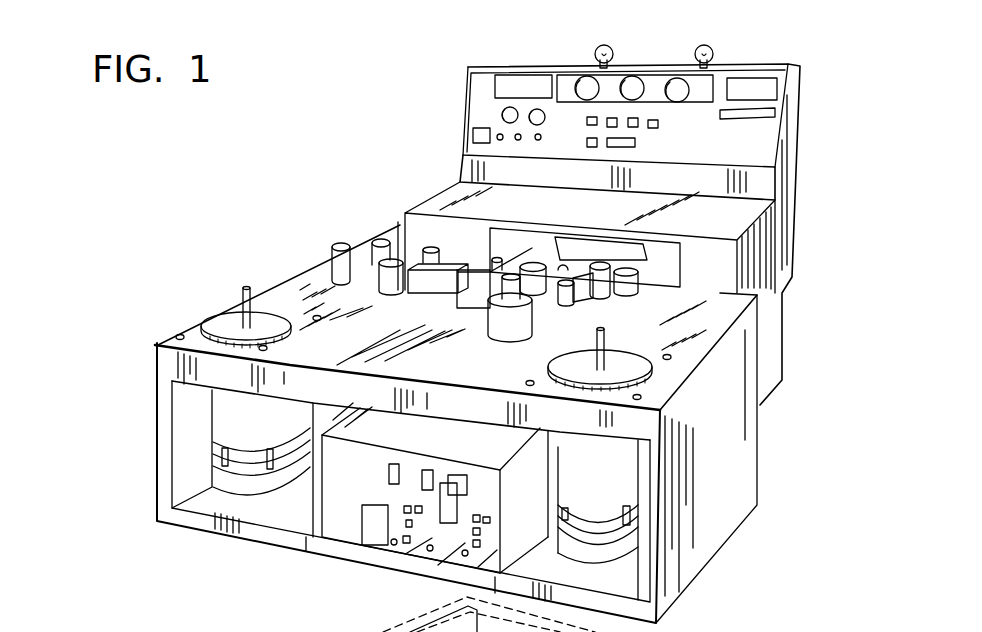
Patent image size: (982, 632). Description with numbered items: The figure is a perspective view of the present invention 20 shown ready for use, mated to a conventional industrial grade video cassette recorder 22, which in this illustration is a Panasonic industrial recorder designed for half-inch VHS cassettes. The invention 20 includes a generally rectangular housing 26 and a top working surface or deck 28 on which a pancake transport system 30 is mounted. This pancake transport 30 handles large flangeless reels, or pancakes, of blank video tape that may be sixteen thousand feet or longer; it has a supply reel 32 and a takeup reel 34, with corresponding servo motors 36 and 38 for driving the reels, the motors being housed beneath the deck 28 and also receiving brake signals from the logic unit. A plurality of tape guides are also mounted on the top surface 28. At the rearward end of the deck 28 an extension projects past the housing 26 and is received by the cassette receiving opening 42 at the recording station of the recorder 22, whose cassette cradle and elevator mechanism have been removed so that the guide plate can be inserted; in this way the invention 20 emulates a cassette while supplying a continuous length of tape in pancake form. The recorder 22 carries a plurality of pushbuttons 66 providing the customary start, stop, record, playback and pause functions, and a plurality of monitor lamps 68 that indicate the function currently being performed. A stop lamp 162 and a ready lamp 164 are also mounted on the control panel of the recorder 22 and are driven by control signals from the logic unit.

The present invention 20 is at (303, 293).
The video cassette recorder 22 is at (463, 154).
The housing 26 is at (707, 440).
The top working surface or deck 28 is at (705, 318).
The pancake transport system 30 is at (175, 317).
The supply reel 32 is at (227, 330).
The takeup reel 34 is at (613, 361).
The servo motor (supply motor) 36 is at (247, 410).
The servo motor (takeup motor) 38 is at (610, 458).
The cassette receiving opening 42 is at (665, 249).
The pushbuttons 66 is at (584, 118).
The monitor lamps 68 is at (632, 74).
The stop lamp 162 is at (604, 45).
The ready lamp 164 is at (709, 48).